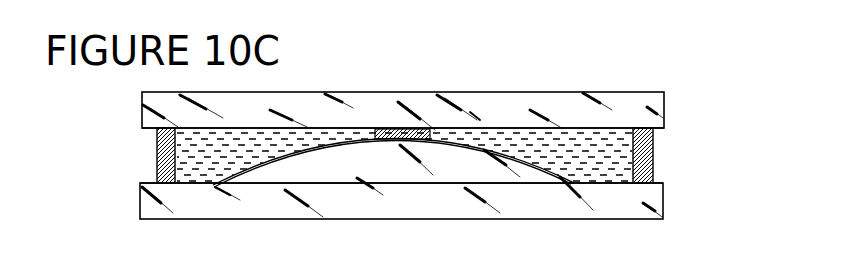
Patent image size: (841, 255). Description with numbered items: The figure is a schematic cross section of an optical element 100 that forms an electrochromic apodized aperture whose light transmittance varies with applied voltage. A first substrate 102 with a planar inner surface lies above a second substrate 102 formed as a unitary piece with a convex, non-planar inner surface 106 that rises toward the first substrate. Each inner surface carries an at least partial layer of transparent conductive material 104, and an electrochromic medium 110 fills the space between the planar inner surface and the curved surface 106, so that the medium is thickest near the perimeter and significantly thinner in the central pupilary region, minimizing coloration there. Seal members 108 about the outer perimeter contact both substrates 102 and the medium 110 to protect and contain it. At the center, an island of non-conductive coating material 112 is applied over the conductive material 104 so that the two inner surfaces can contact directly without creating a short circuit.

The optical element 100 is at (484, 80).
The substrate 102 is at (528, 123).
The transparent conductive material 104 is at (150, 133).
The non-planar inner surface 106 is at (343, 178).
The seal member 108 is at (157, 162).
The electrochromic medium 110 is at (245, 129).
The non-conductive coating material 112 is at (393, 129).